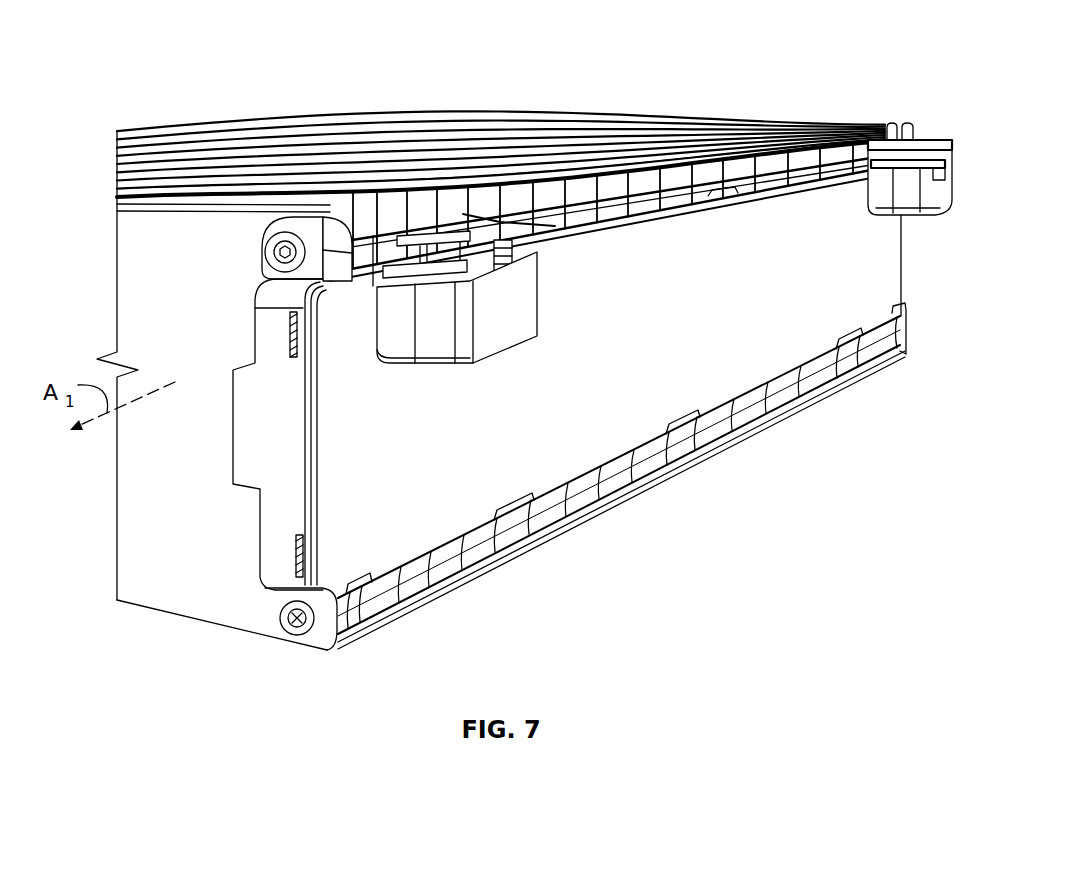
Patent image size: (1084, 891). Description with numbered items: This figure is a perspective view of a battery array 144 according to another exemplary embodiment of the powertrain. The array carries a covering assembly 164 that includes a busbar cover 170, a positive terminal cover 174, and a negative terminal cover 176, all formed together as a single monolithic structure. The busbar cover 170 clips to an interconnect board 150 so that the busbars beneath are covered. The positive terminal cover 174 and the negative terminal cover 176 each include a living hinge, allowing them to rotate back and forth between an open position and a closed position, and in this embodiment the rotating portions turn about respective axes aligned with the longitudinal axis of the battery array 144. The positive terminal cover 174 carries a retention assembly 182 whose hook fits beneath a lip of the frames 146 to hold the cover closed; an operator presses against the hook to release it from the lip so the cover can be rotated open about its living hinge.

The battery array 144 is at (790, 76).
The frames 146 is at (333, 138).
The retention assembly 182 is at (453, 168).
The negative terminal cover 176 is at (920, 140).
The positive terminal cover 174 is at (515, 243).
The covering assembly 164 is at (598, 415).
The busbar cover 170 is at (463, 483).
The interconnect board 150 is at (287, 543).